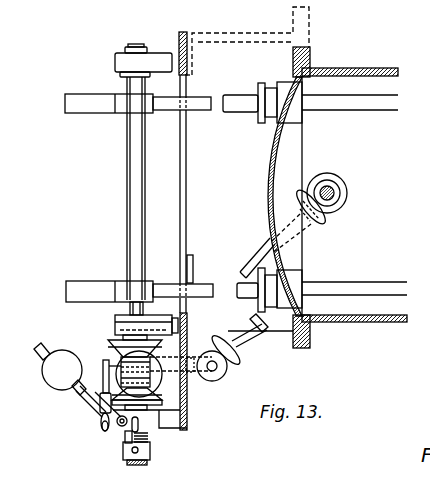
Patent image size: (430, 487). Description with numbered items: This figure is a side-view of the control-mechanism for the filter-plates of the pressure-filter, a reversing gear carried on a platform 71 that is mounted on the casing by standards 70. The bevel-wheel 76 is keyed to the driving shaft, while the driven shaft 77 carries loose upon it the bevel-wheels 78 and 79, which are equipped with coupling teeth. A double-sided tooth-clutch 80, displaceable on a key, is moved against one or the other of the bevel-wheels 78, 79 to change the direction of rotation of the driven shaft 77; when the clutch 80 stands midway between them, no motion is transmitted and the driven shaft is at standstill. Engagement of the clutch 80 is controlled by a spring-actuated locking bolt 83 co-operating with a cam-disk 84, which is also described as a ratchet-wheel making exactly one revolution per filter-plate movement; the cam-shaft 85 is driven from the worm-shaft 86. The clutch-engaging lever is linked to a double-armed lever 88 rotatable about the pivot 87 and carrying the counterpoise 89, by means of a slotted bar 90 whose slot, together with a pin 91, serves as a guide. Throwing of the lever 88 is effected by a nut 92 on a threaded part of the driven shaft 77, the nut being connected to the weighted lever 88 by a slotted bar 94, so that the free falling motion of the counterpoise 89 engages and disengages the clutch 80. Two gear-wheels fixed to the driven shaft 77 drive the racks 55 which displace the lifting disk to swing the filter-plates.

The racks 55 is at (97, 113).
The standards 70 is at (247, 34).
The platform 71 is at (183, 158).
The bevel-wheel 76 is at (158, 358).
The driven shaft 77 is at (146, 203).
The bevel-wheel 78 is at (156, 393).
The bevel-wheel 79 is at (115, 342).
The double-sided tooth-clutch 80 is at (110, 362).
The locking bolt 83 is at (188, 366).
The cam-disk 84 is at (228, 372).
The cam-shaft 85 is at (221, 377).
The worm-shaft 86 is at (331, 189).
The pivot 87 is at (121, 427).
The double-armed lever 88 is at (90, 396).
The counterpoise 89 is at (62, 390).
The slotted bar 90 is at (104, 429).
The pin 91 is at (101, 418).
The nut 92 is at (151, 451).
The slotted bar 94 is at (138, 422).